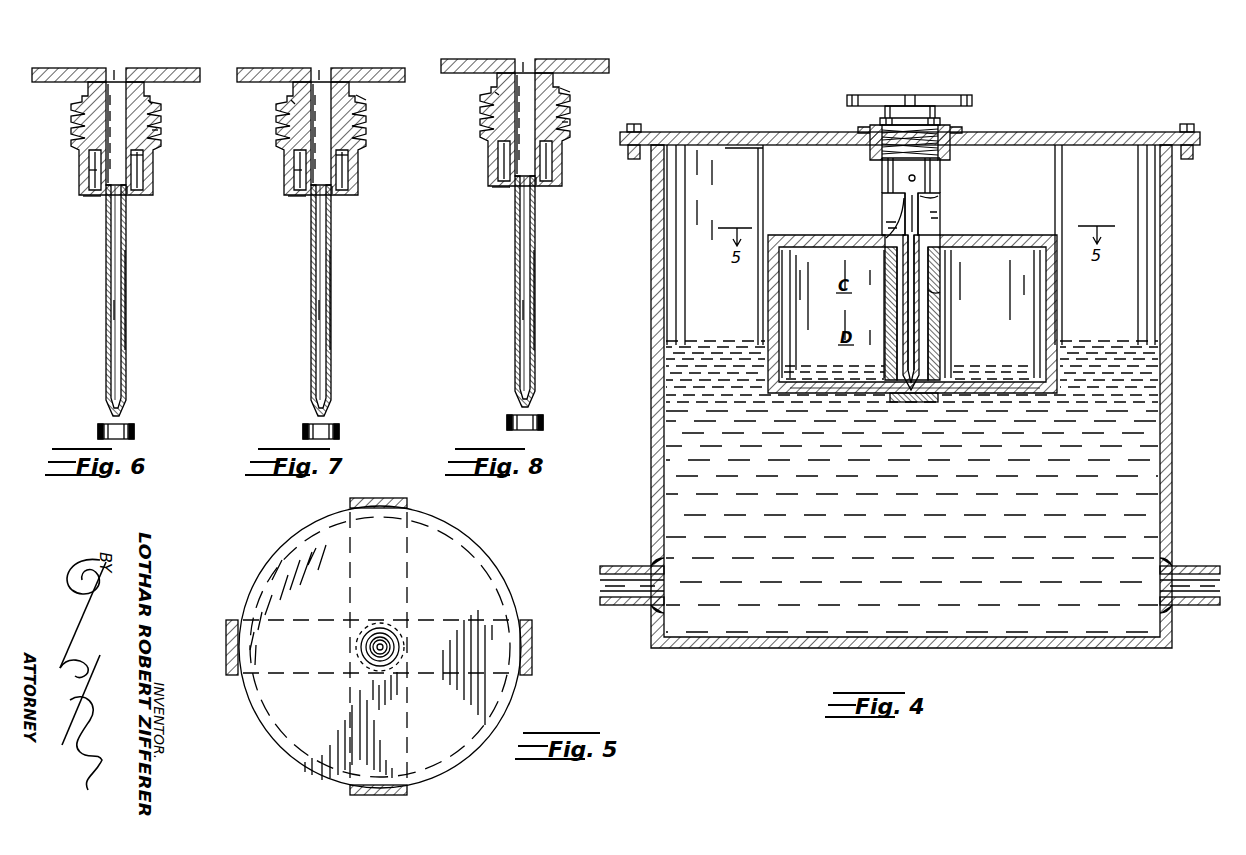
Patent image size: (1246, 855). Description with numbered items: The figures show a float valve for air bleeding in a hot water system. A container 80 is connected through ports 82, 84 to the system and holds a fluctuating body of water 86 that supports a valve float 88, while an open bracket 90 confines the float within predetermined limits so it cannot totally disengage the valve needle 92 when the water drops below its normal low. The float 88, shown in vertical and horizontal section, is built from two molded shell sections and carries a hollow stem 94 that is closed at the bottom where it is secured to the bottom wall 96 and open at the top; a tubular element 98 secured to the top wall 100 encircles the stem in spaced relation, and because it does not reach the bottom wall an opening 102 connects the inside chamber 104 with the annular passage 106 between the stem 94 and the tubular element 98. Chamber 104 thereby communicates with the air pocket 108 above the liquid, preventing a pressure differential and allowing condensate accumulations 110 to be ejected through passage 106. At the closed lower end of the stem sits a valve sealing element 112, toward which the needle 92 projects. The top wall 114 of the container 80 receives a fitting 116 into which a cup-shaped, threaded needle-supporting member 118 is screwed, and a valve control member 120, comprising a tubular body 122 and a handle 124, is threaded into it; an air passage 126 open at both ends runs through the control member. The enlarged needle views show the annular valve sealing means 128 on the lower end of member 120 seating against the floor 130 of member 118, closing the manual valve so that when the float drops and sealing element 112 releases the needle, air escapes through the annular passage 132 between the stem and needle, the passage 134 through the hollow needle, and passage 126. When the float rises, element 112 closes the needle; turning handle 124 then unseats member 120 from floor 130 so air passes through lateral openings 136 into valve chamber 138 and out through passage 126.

In FIG. 4, the container 80 is at (651, 475).
In FIG. 4, the port 82 is at (1188, 606).
In FIG. 4, the port 84 is at (620, 606).
In FIG. 4, the body of water 86 is at (740, 345).
In FIG. 5, the valve float 88 is at (502, 560).
In FIG. 4, the valve float 88 is at (1000, 240).
In FIG. 5, the open bracket 90 is at (400, 497).
In FIG. 4, the open bracket 90 is at (1062, 190).
In FIG. 6, the valve needle 92 is at (128, 314).
In FIG. 7, the valve needle 92 is at (333, 314).
In FIG. 8, the valve needle 92 is at (538, 288).
In FIG. 5, the valve needle 92 is at (390, 648).
In FIG. 4, the valve needle 92 is at (935, 205).
In FIG. 5, the hollow stem 94 is at (392, 636).
In FIG. 4, the hollow stem 94 is at (935, 275).
In FIG. 4, the bottom wall 96 is at (1000, 393).
In FIG. 4, the tubular element 98 is at (932, 300).
In FIG. 5, the top wall 100 is at (448, 584).
In FIG. 4, the top wall 100 is at (825, 235).
In FIG. 4, the opening 102 is at (945, 372).
In FIG. 4, the inside chamber 104 is at (1000, 286).
In FIG. 5, the annular passage 106 is at (388, 628).
In FIG. 4, the annular passage 106 is at (938, 228).
In FIG. 4, the air pocket 108 is at (745, 192).
In FIG. 4, the condensate accumulations 110 is at (870, 372).
In FIG. 6, the valve sealing element 112 is at (134, 432).
In FIG. 7, the valve sealing element 112 is at (340, 430).
In FIG. 8, the valve sealing element 112 is at (544, 422).
In FIG. 4, the valve sealing element 112 is at (903, 402).
In FIG. 4, the top wall 114 is at (1058, 132).
In FIG. 4, the fitting 116 is at (955, 122).
In FIG. 6, the needle-supporting member 118 is at (158, 138).
In FIG. 8, the needle-supporting member 118 is at (562, 132).
In FIG. 7, the valve control member 120 is at (380, 105).
In FIG. 8, the valve control member 120 is at (571, 100).
In FIG. 6, the tubular body 122 is at (152, 104).
In FIG. 7, the tubular body 122 is at (292, 104).
In FIG. 8, the tubular body 122 is at (497, 95).
In FIG. 6, the handle 124 is at (168, 68).
In FIG. 7, the handle 124 is at (380, 68).
In FIG. 8, the handle 124 is at (585, 60).
In FIG. 4, the handle 124 is at (955, 95).
In FIG. 6, the air passage 126 is at (117, 72).
In FIG. 7, the air passage 126 is at (319, 72).
In FIG. 8, the air passage 126 is at (523, 64).
In FIG. 6, the annular valve sealing means 128 is at (128, 190).
In FIG. 7, the annular valve sealing means 128 is at (331, 192).
In FIG. 8, the annular valve sealing means 128 is at (536, 183).
In FIG. 6, the floor 130 is at (95, 196).
In FIG. 7, the floor 130 is at (300, 196).
In FIG. 8, the floor 130 is at (500, 187).
In FIG. 5, the annular passage 132 is at (368, 650).
In FIG. 4, the annular passage 132 is at (895, 225).
In FIG. 6, the passage 134 is at (113, 308).
In FIG. 7, the passage 134 is at (318, 308).
In FIG. 8, the passage 134 is at (523, 308).
In FIG. 6, the lateral openings 136 is at (88, 173).
In FIG. 7, the lateral openings 136 is at (293, 173).
In FIG. 6, the valve chamber 138 is at (138, 162).
In FIG. 7, the valve chamber 138 is at (345, 162).